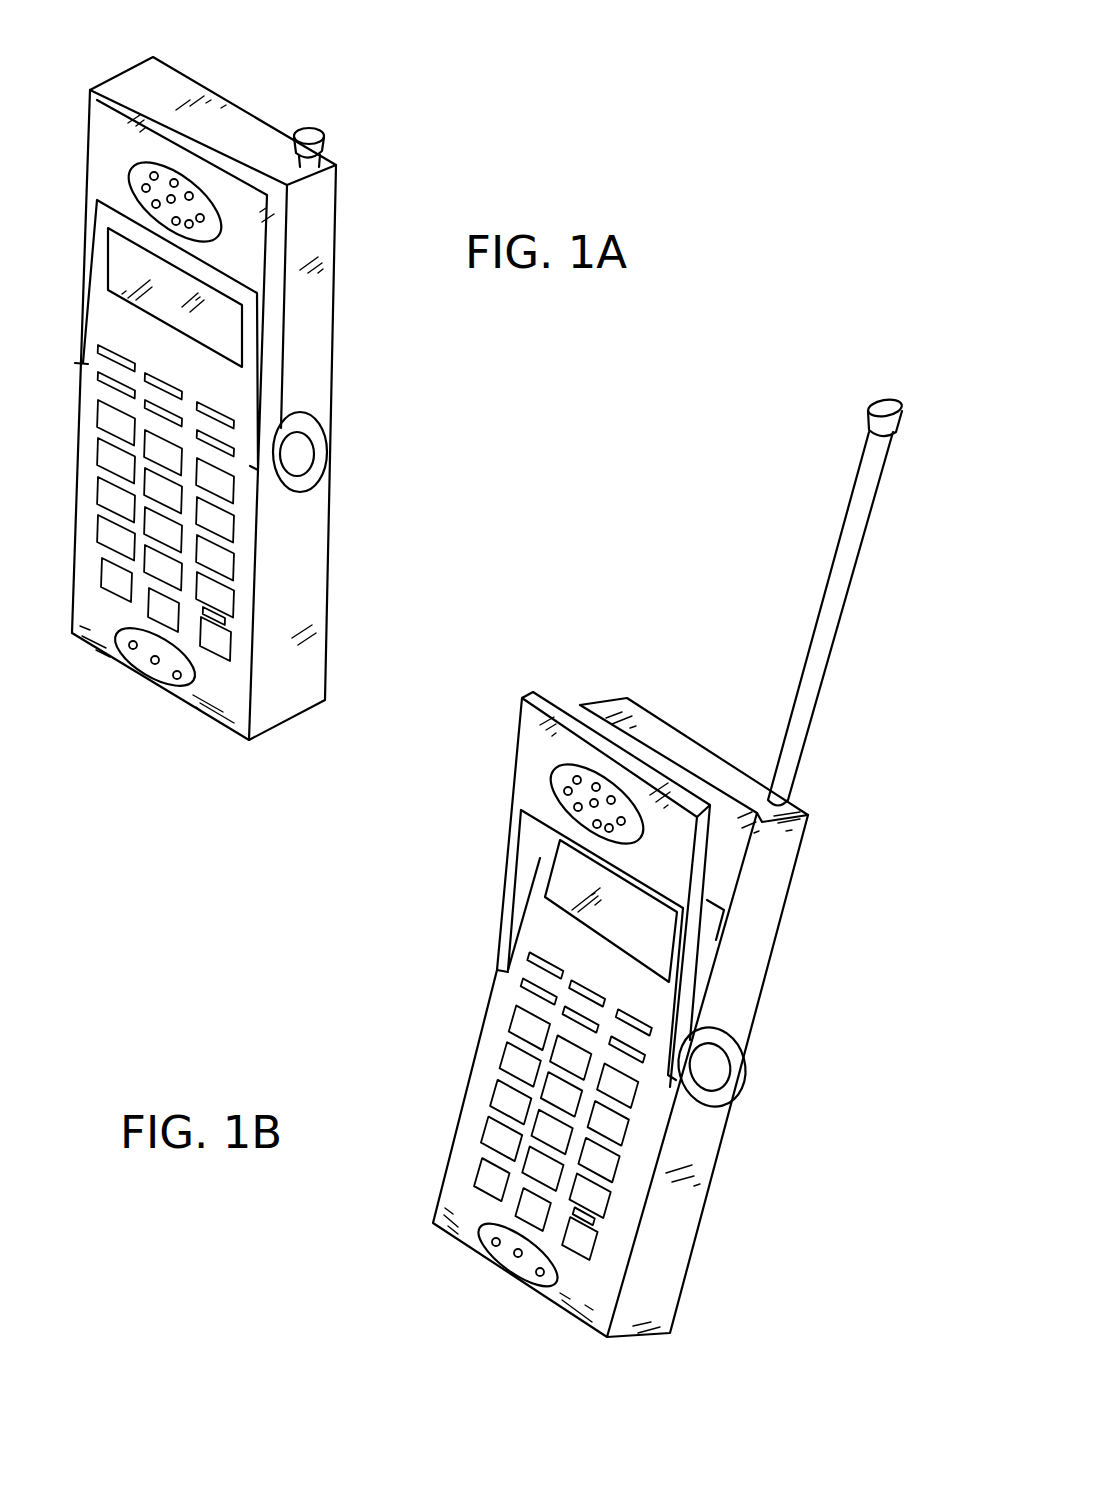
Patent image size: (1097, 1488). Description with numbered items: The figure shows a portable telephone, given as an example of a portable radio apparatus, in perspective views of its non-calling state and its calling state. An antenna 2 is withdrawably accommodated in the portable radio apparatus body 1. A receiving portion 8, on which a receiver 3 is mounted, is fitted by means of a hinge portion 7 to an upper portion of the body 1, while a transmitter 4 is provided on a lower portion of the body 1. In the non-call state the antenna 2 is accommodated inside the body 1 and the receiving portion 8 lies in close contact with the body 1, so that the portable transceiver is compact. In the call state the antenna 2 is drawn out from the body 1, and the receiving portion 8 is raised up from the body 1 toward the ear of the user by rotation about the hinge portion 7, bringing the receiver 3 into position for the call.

In FIG. 1A, the portable radio apparatus body 1 is at (265, 712).
In FIG. 1B, the portable radio apparatus body 1 is at (688, 1240).
In FIG. 1A, the antenna 2 is at (320, 137).
In FIG. 1B, the antenna 2 is at (862, 482).
In FIG. 1A, the receiver 3 is at (140, 163).
In FIG. 1B, the receiver 3 is at (566, 768).
In FIG. 1A, the transmitter 4 is at (112, 653).
In FIG. 1B, the transmitter 4 is at (505, 1262).
In FIG. 1A, the hinge portion 7 is at (300, 447).
In FIG. 1B, the hinge portion 7 is at (720, 1056).
In FIG. 1A, the receiving portion 8 is at (100, 132).
In FIG. 1B, the receiving portion 8 is at (528, 735).